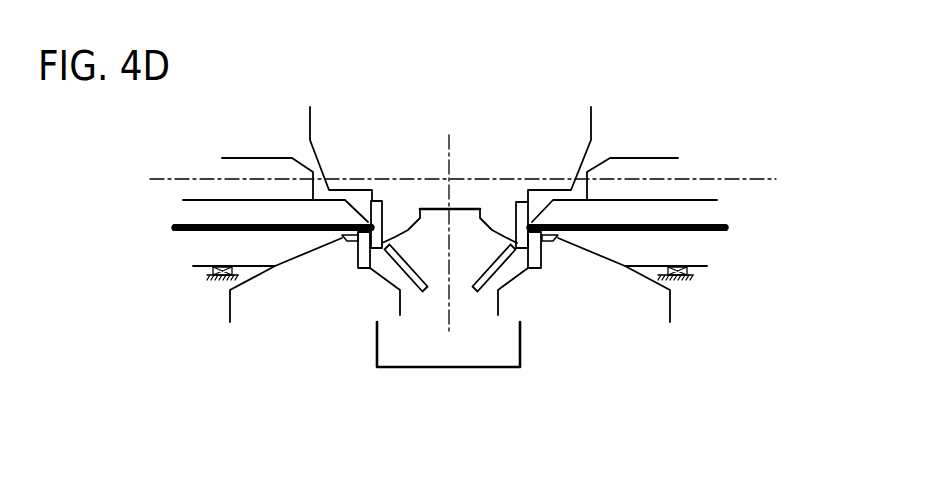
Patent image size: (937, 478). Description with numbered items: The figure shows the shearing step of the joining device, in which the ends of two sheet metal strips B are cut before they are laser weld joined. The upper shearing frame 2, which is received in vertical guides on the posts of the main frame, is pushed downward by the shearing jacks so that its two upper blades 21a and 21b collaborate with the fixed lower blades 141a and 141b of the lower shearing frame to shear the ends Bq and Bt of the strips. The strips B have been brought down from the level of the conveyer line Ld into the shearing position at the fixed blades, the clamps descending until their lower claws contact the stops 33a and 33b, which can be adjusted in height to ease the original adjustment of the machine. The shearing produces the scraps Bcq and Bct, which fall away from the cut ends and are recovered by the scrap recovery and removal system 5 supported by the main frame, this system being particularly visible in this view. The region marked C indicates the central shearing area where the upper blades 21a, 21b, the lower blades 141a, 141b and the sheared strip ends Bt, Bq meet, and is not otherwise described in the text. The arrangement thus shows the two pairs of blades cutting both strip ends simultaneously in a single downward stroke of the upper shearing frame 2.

The upper shearing frame 2 is at (448, 170).
The scrap recovery and removal system 5 is at (520, 345).
The upper blade 21a is at (377, 201).
The upper blade 21b is at (520, 202).
The stop 33a is at (212, 275).
The stop 33b is at (680, 277).
The lower blade 141a is at (341, 239).
The lower blade 141b is at (559, 240).
The sheet metal strip B is at (683, 232).
The strip end Bt is at (307, 222).
The strip end Bq is at (600, 222).
The shearing scrap Bcq is at (408, 277).
The shearing scrap Bct is at (494, 276).
The assembly C is at (501, 104).
The conveyer line Ld is at (478, 180).